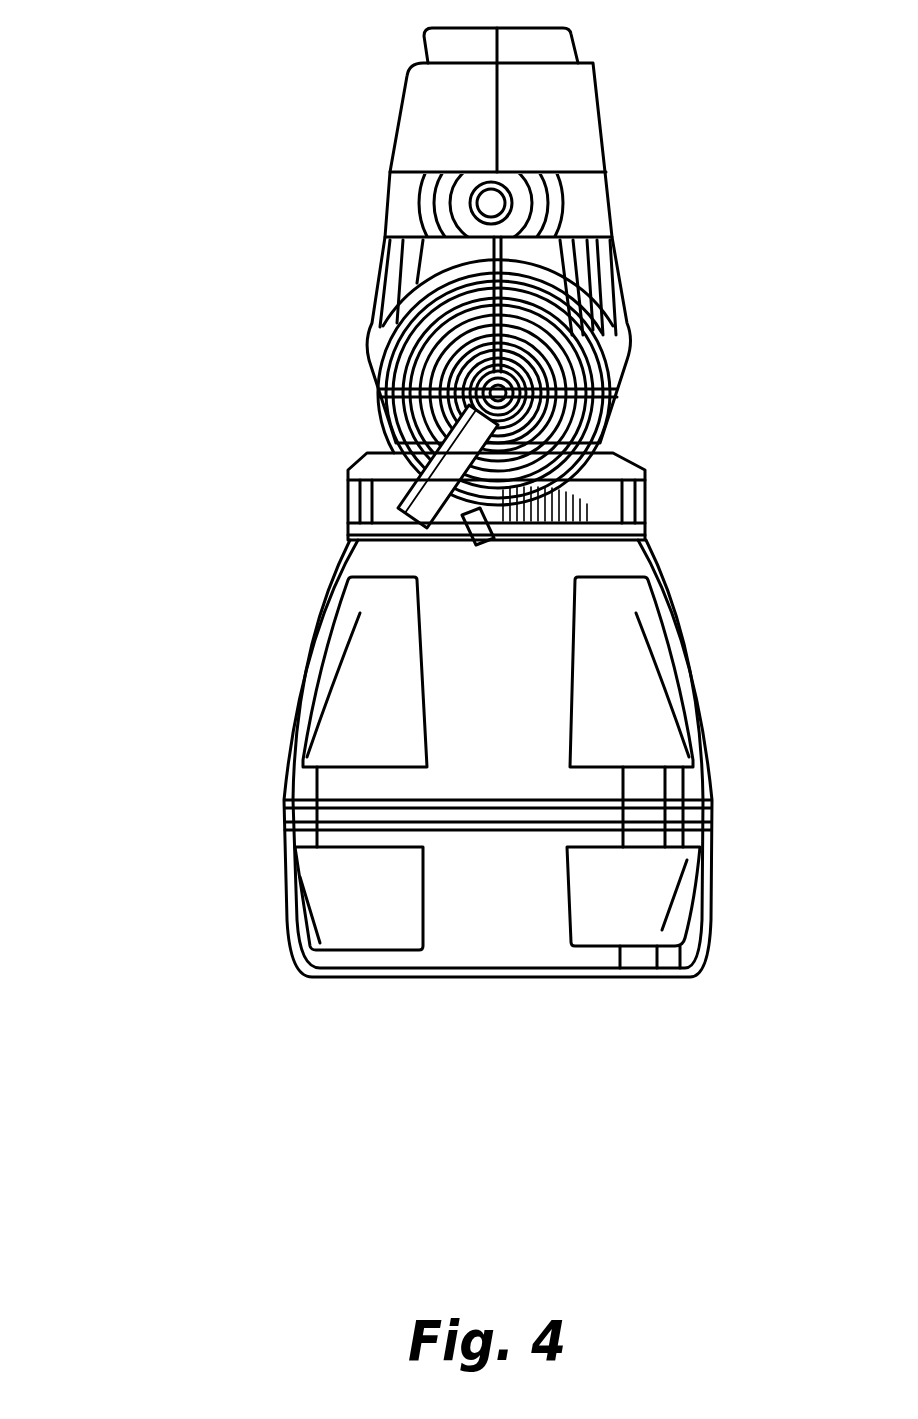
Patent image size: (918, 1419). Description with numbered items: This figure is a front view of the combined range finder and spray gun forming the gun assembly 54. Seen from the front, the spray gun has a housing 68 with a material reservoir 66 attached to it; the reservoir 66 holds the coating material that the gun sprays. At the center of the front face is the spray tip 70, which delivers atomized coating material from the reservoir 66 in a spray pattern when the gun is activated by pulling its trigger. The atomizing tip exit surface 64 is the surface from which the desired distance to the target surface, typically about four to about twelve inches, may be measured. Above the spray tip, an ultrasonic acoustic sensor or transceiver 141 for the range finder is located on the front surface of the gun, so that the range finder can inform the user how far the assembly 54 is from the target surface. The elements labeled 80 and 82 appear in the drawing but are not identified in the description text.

The gun assembly 54 is at (258, 71).
The top cap 82 is at (604, 100).
The upper housing 80 is at (383, 203).
The ultrasonic acoustic sensor or transceiver 141 is at (515, 199).
The housing 68 is at (383, 260).
The spray tip 70 is at (617, 418).
The atomizing tip exit surface 64 is at (400, 437).
The material reservoir 66 is at (293, 712).